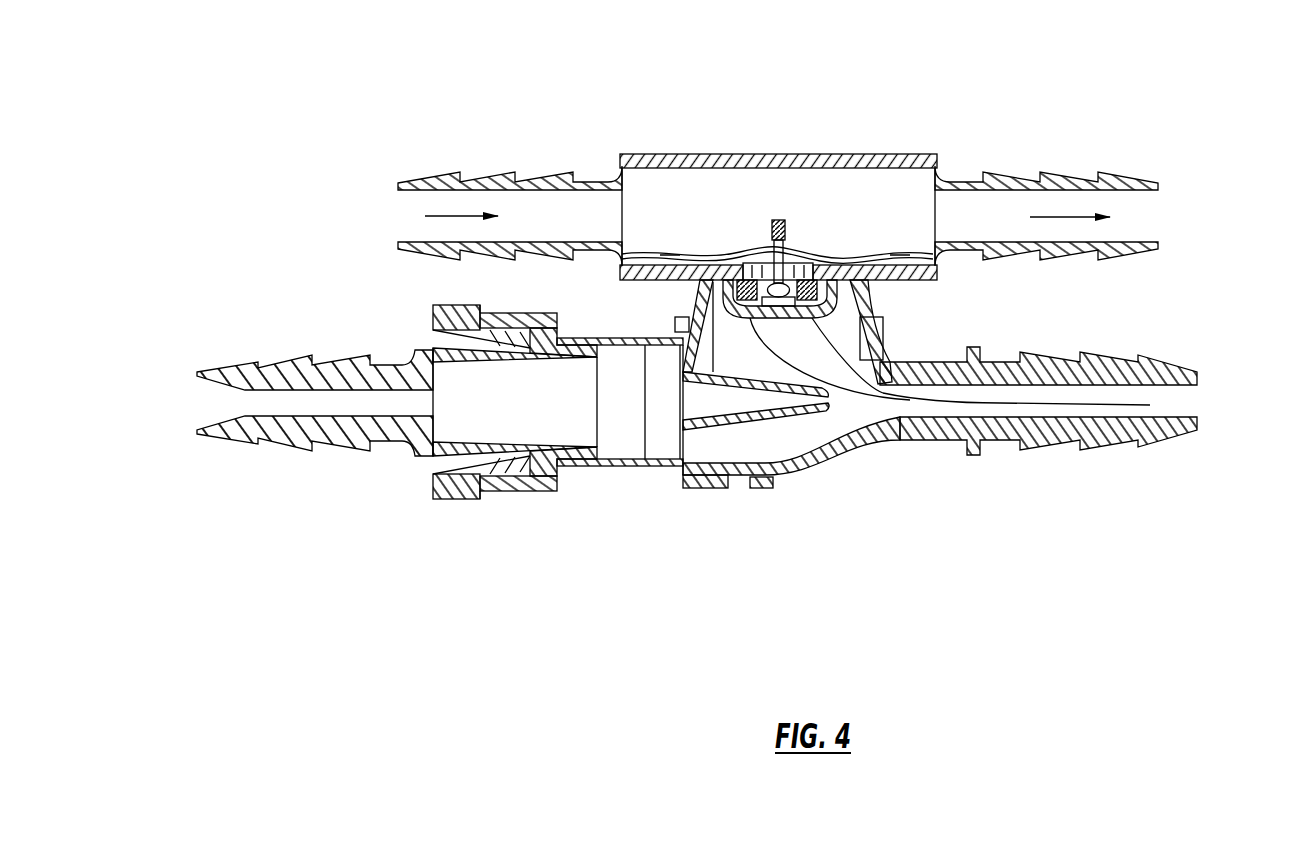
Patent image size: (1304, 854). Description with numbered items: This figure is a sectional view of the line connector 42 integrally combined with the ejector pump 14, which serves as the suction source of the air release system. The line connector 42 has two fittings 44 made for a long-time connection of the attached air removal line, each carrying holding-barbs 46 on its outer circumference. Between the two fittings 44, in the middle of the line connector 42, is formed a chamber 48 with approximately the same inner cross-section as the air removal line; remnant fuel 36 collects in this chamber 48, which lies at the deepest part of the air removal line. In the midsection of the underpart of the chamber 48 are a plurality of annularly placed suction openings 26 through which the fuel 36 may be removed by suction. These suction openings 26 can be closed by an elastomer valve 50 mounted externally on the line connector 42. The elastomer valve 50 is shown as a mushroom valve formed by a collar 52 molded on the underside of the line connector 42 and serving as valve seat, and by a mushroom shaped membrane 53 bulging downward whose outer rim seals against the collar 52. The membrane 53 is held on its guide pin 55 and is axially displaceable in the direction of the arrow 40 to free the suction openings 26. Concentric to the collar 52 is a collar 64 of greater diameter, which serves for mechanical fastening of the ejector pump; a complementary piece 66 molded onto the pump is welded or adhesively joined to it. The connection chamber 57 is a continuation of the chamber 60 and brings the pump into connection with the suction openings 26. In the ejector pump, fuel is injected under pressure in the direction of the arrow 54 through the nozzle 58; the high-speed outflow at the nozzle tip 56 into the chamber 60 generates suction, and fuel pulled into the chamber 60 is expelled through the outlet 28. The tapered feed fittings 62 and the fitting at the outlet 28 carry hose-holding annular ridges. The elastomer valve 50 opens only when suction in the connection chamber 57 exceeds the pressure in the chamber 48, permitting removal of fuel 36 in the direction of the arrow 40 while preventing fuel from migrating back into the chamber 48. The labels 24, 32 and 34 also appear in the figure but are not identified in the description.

The ejector pump 14 is at (685, 377).
The diaphragm 24 is at (800, 252).
The suction openings 26 is at (750, 262).
The outlet 28 is at (942, 436).
The barb fitting 32 is at (773, 206).
The flow direction 34 is at (950, 212).
The remnant fuel 36 is at (700, 248).
The arrow 40 is at (1150, 405).
The line connector 42 is at (817, 165).
The fittings 44 is at (500, 180).
The holding-barbs 46 is at (572, 180).
The chamber 48 is at (655, 192).
The elastomer valve 50 is at (790, 240).
The collar 52 is at (705, 292).
The mushroom shaped membrane 53 is at (770, 302).
The arrow 54 is at (90, 430).
The guide pin 55 is at (775, 232).
The nozzle tip 56 is at (810, 322).
The connection chamber 57 is at (862, 298).
The nozzle 58 is at (728, 436).
The chamber 60 is at (850, 432).
The tapered feed fittings 62 is at (355, 432).
The collar 64 is at (868, 300).
The complementary piece 66 is at (882, 350).